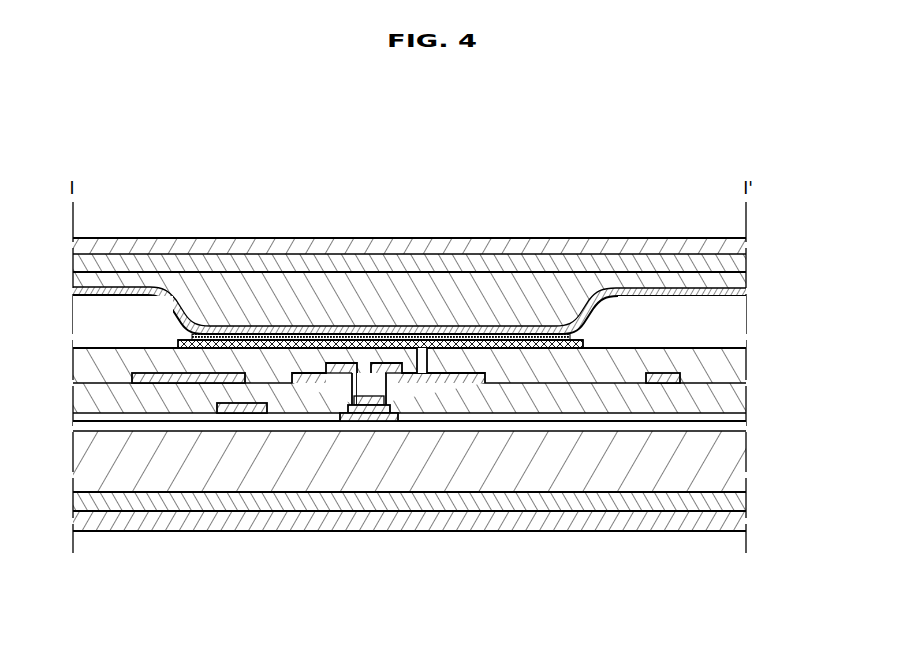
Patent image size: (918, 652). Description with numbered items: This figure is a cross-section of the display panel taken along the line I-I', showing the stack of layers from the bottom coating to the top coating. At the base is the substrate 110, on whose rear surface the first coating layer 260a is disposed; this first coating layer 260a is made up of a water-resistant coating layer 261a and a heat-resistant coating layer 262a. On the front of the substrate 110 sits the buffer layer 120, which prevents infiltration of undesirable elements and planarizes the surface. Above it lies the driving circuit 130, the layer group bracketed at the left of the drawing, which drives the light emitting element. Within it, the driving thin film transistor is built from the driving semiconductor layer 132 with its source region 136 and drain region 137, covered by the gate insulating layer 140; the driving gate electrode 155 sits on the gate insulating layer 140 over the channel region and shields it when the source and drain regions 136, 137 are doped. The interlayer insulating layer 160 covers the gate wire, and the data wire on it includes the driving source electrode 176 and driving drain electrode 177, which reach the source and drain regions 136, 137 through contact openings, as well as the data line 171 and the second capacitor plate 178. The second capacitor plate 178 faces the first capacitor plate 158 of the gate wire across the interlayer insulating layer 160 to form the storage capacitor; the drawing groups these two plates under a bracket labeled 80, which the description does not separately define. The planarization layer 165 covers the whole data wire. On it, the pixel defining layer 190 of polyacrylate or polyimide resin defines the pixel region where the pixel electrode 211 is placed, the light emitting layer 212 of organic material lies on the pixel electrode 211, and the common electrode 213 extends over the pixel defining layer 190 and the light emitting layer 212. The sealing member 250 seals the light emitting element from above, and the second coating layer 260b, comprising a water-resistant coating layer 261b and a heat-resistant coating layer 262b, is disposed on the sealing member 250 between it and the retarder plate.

The substrate 110 is at (720, 467).
The buffer layer 120 is at (568, 432).
The driving circuit 130 is at (412, 489).
The driving semiconductor layer 132 is at (363, 411).
The source region 136 is at (340, 372).
The drain region 137 is at (421, 365).
The gate insulating layer 140 is at (522, 396).
The driving gate electrode 155 is at (386, 402).
The first capacitor plate 158 is at (242, 408).
The interlayer insulating layer 160 is at (720, 400).
The planarization layer 165 is at (720, 366).
The data line 171 is at (663, 381).
The driving source electrode 176 is at (318, 380).
The driving drain electrode 177 is at (452, 384).
The second capacitor plate 178 is at (215, 378).
The signal lines 80 is at (199, 496).
The pixel defining layer 190 is at (90, 325).
The pixel electrode 211 is at (228, 346).
The light emitting layer 212 is at (266, 341).
The common electrode 213 is at (302, 336).
The sealing member 250 is at (725, 283).
The first coating layer 260a is at (477, 512).
The water-resistant coating layer 261a is at (722, 500).
The heat-resistant coating layer 262a is at (720, 524).
The second coating layer 260b is at (477, 244).
The water-resistant coating layer 261b is at (730, 261).
The heat-resistant coating layer 262b is at (730, 245).